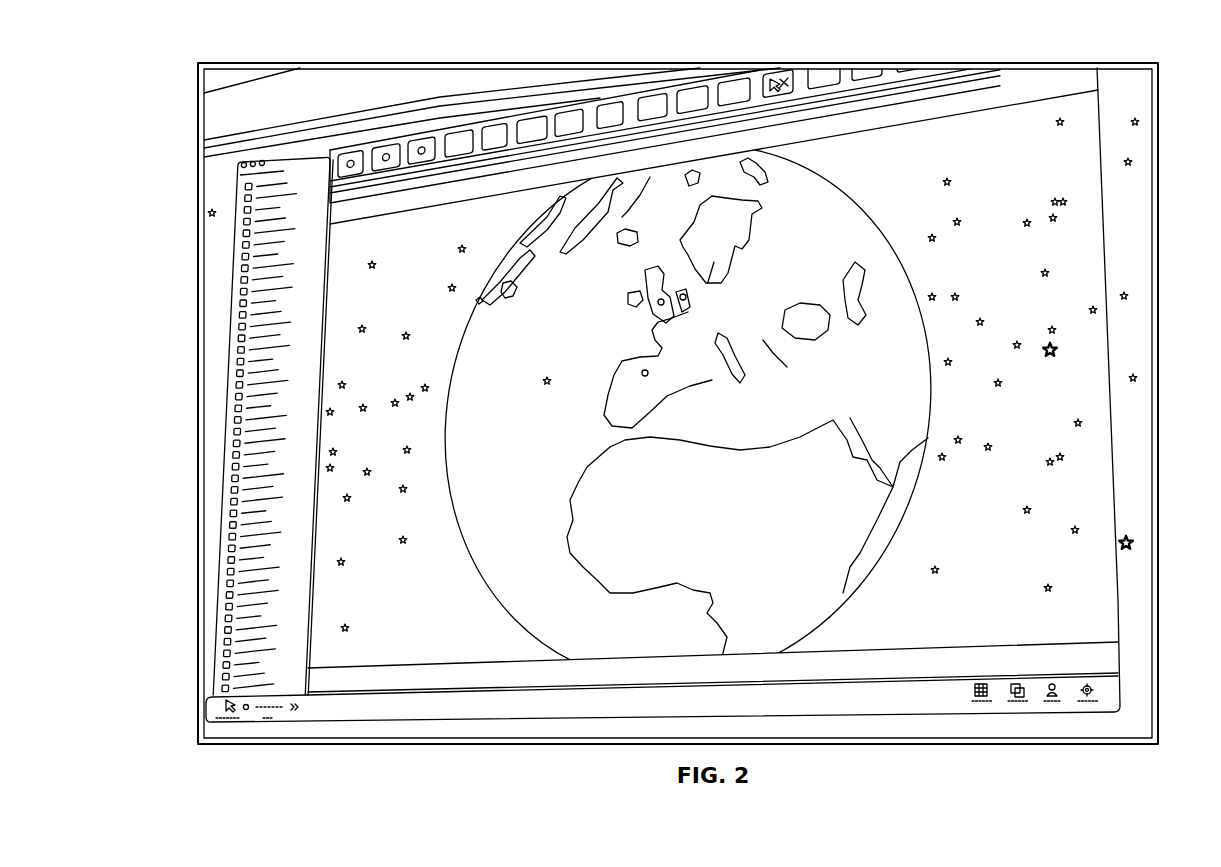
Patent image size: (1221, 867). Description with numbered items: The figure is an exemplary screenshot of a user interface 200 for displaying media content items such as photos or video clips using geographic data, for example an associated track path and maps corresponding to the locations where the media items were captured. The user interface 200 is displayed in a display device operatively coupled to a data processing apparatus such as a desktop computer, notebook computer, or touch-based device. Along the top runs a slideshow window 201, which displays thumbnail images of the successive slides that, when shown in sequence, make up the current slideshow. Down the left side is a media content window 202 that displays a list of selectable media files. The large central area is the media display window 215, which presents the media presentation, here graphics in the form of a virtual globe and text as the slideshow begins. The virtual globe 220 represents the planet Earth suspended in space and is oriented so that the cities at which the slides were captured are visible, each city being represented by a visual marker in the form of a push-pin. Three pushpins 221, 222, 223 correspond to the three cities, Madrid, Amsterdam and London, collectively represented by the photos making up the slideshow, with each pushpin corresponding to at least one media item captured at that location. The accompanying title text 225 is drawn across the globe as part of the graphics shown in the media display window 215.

The user interface 200 is at (188, 65).
The slideshow window 201 is at (493, 134).
The media content window 202 is at (282, 178).
The media display window 215 is at (1060, 194).
The globe map image 220 is at (530, 344).
The pushpin 221 is at (643, 371).
The pushpin 222 is at (642, 292).
The pushpin 223 is at (680, 295).
The title text 225 is at (517, 453).